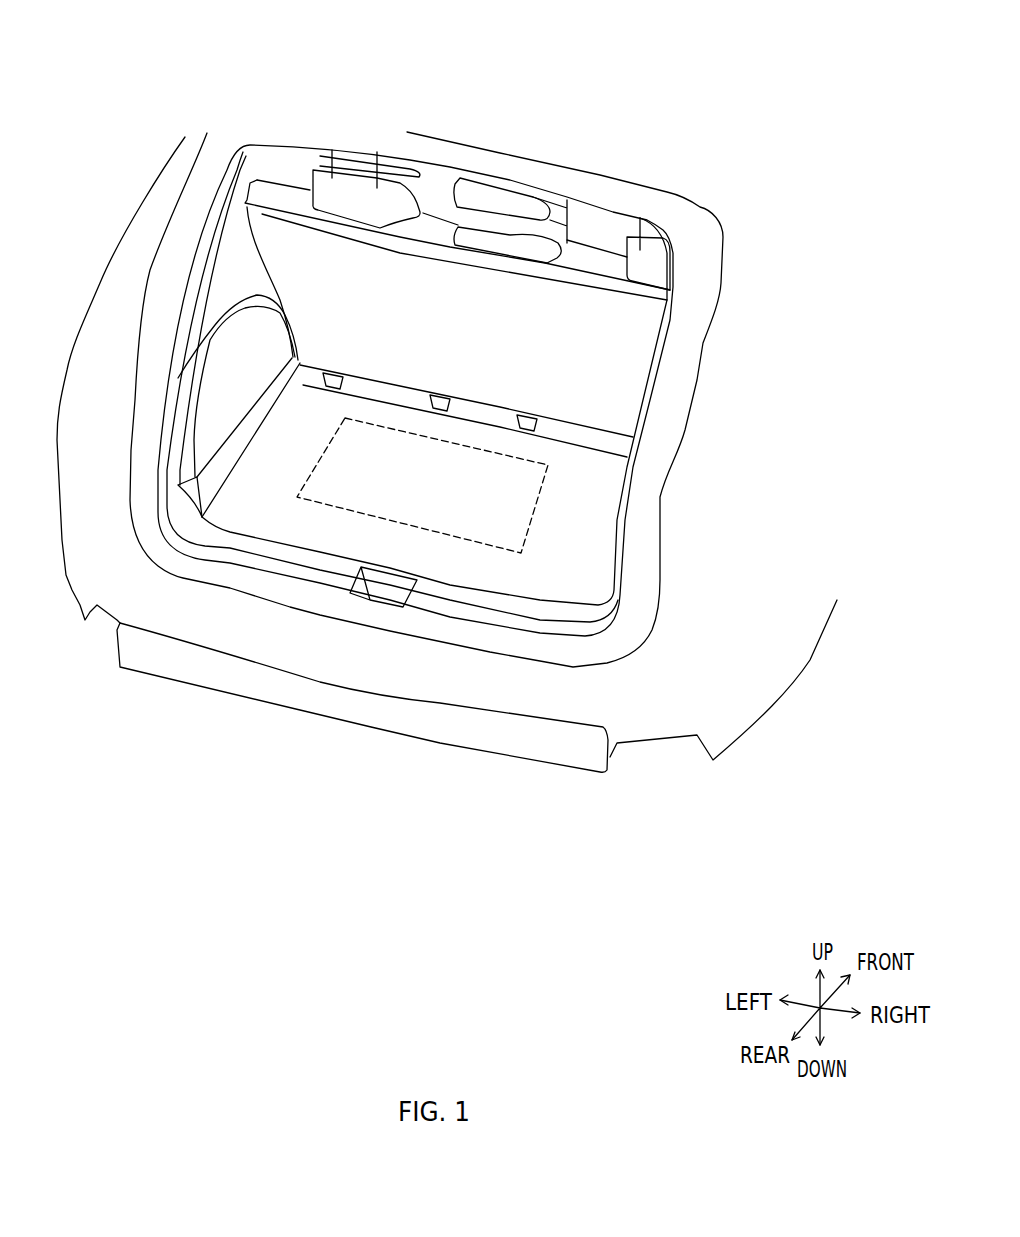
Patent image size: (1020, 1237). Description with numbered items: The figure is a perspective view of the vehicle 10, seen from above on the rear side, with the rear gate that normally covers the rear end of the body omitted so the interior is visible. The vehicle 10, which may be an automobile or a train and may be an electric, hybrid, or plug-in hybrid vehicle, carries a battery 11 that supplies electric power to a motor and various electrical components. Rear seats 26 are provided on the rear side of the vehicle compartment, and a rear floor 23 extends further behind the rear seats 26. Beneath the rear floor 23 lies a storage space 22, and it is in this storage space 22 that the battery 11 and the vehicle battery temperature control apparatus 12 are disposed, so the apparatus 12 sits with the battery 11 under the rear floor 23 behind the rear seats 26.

The vehicle 10 is at (382, 66).
The battery 11 is at (548, 462).
The vehicle battery temperature control apparatus 12 is at (333, 737).
The storage space 22 is at (572, 436).
The rear floor 23 is at (303, 438).
The rear seats 26 is at (270, 237).